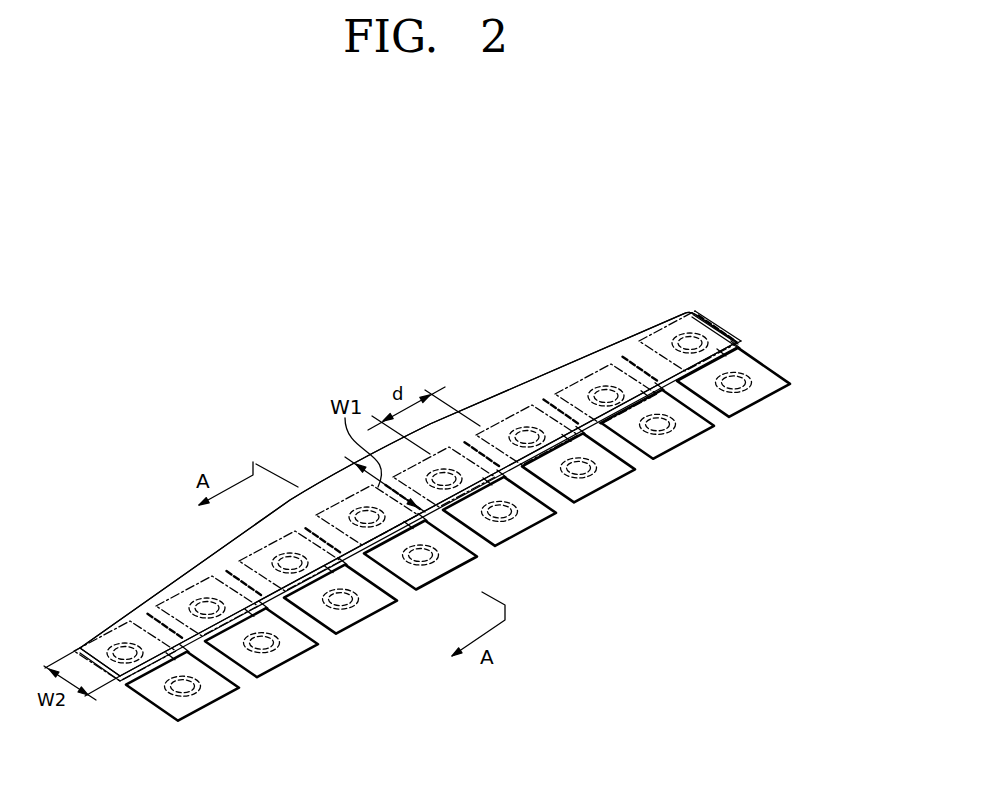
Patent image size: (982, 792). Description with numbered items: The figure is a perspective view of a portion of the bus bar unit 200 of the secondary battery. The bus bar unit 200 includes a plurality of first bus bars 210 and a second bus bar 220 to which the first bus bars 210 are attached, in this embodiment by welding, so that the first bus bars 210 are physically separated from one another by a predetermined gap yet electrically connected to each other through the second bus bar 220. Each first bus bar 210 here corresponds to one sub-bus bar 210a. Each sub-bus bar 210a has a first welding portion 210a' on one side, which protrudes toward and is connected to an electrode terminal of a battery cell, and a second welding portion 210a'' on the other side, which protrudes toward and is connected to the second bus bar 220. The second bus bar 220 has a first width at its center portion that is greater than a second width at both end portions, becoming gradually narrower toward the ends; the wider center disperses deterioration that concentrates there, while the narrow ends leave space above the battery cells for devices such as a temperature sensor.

The bus bar unit 200 is at (710, 243).
The first bus bars 210 is at (830, 466).
The sub-bus bar 210a is at (722, 434).
The first welding portion 210a' is at (758, 353).
The second welding portion 210a'' is at (713, 312).
The second bus bar 220 is at (335, 488).